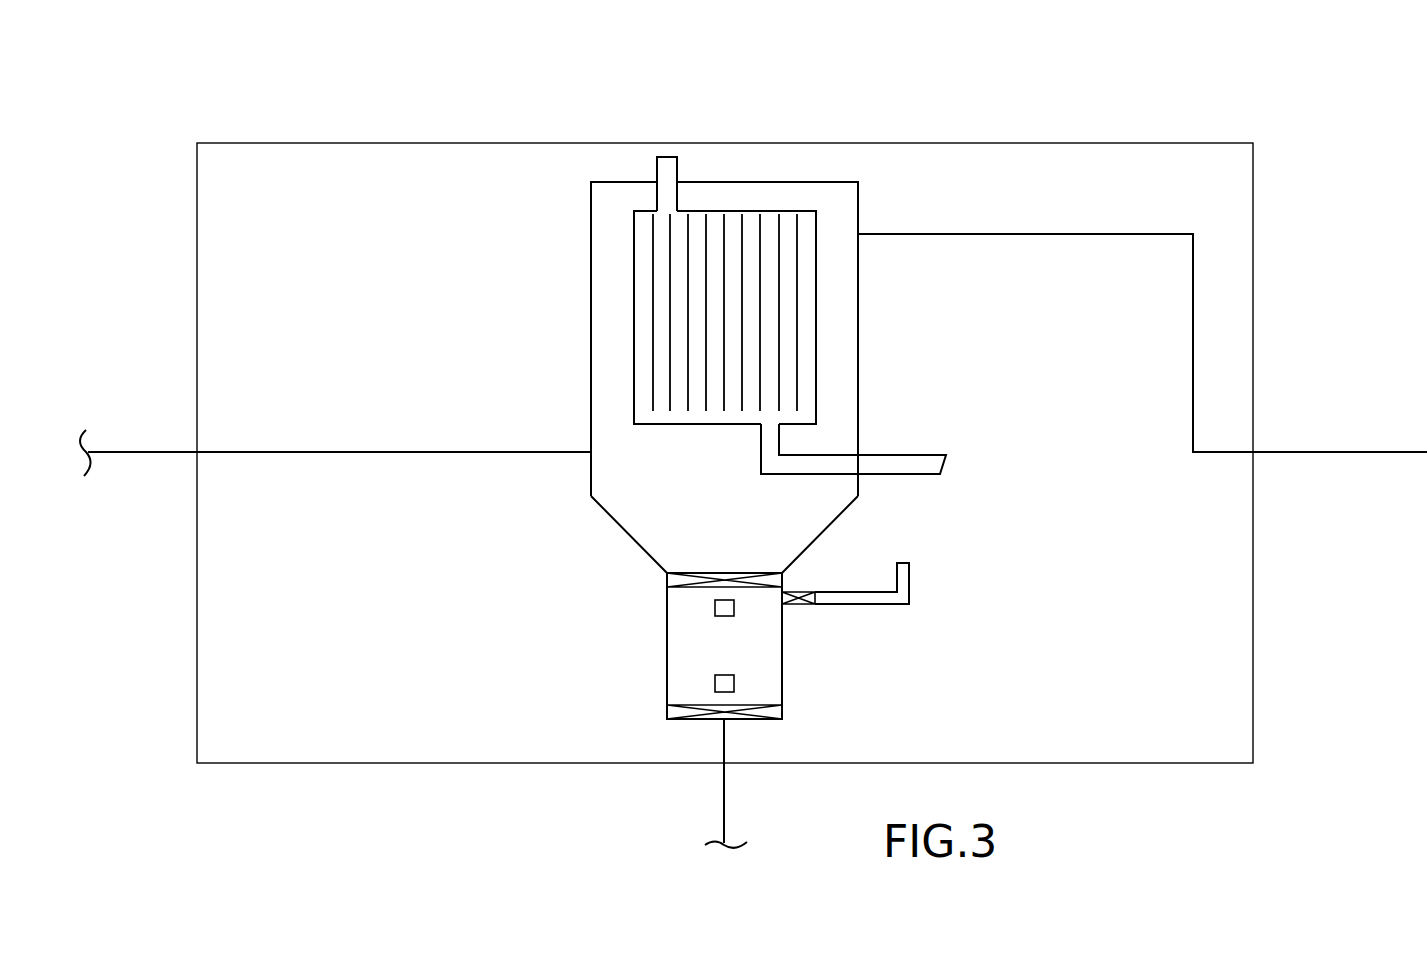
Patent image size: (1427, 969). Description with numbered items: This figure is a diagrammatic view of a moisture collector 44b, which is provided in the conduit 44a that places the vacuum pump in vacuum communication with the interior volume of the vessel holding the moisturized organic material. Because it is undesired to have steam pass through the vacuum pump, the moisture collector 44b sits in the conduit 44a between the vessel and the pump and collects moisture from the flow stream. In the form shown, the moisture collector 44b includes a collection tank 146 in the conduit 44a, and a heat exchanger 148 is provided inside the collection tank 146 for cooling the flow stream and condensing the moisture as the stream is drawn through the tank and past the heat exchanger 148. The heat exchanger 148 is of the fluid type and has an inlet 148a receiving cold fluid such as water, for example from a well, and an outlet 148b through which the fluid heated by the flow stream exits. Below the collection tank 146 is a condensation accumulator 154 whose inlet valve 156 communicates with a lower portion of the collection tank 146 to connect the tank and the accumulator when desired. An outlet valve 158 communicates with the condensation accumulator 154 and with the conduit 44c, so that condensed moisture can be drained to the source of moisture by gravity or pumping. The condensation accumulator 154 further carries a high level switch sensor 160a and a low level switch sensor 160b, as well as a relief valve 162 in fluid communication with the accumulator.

The conduit 44a is at (139, 450).
The moisture collector 44b is at (1274, 124).
The conduit 44c is at (724, 805).
The collection tank 146 is at (591, 306).
The heat exchanger 148 is at (816, 362).
The inlet 148a is at (667, 162).
The outlet 148b is at (930, 464).
The condensation accumulator 154 is at (782, 664).
The inlet valve 156 is at (672, 578).
The outlet valve 158 is at (672, 713).
The high level switch sensor 160a is at (715, 608).
The low level switch sensor 160b is at (715, 680).
The relief valve 162 is at (800, 600).